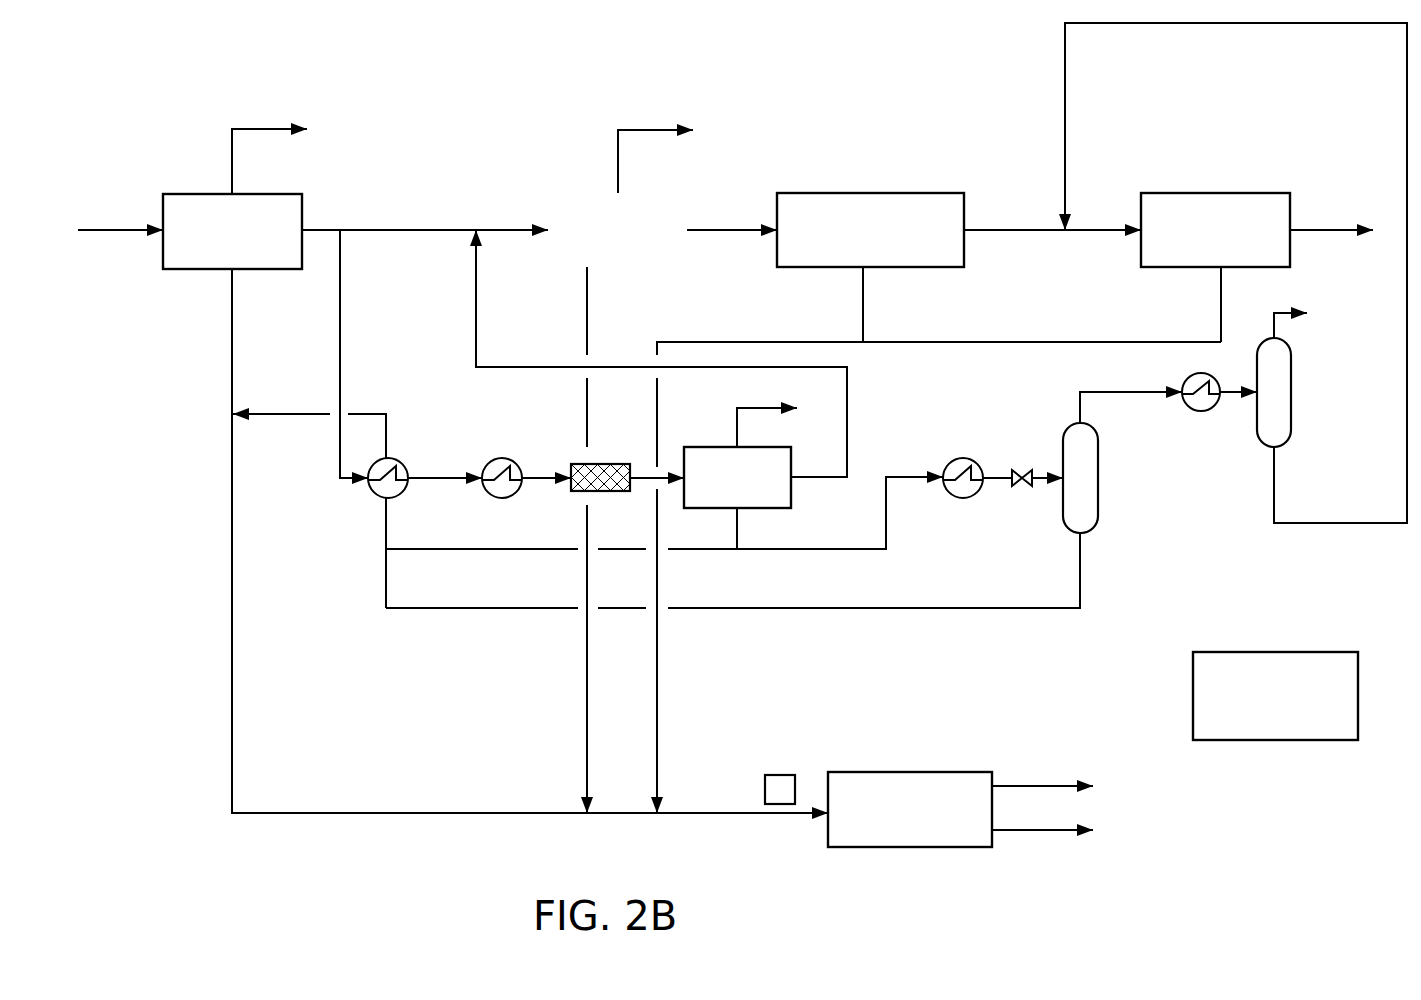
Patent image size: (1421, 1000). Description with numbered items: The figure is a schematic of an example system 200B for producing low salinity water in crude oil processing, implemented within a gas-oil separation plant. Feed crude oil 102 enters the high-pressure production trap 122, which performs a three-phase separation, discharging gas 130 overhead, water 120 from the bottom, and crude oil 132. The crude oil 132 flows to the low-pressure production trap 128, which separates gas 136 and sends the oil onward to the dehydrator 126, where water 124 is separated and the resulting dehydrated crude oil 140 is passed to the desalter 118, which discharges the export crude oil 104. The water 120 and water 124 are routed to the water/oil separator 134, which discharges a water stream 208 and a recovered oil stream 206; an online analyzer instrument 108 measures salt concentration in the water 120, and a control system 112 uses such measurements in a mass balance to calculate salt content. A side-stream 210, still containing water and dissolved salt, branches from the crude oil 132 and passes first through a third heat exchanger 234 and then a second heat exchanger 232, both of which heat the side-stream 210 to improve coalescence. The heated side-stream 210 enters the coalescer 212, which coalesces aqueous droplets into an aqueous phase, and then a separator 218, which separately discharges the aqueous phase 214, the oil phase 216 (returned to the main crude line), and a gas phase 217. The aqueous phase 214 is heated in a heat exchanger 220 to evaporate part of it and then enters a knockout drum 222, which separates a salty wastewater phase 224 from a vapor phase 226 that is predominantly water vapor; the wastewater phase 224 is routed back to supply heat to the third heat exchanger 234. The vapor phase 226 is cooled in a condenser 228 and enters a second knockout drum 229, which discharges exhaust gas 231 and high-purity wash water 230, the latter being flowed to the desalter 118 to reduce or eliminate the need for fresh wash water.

The system 200B is at (175, 100).
The crude oil 102 is at (108, 228).
The export crude oil 104 is at (1325, 228).
The online analyzer instrument 108 is at (780, 775).
The control system 112 is at (1193, 694).
The desalter 118 is at (1176, 192).
The water 120 is at (235, 644).
The high-pressure production trap 122 is at (192, 193).
The water 124 is at (658, 668).
The dehydrator 126 is at (815, 192).
The low-pressure production trap 128 is at (618, 268).
The gas 130 is at (255, 128).
The crude oil 132 is at (316, 228).
The water/oil separator 134 is at (938, 772).
The gas 136 is at (658, 128).
The crude oil 140 is at (988, 228).
The water outlet stream 206 is at (1046, 832).
The water stream 208 is at (1048, 786).
The side-stream 210 is at (338, 312).
The coalescer 212 is at (578, 493).
The aqueous phase 214 is at (816, 550).
The oil phase 216 is at (820, 477).
The gas phase 217 is at (735, 428).
The separator 218 is at (713, 494).
The heat exchanger 220 is at (952, 462).
The knockout drum 222 is at (1098, 497).
The wastewater phase 224 is at (1082, 562).
The vapor phase 226 is at (1082, 402).
The condenser 228 is at (1202, 412).
The second knockout drum 229 is at (1292, 390).
The wash water 230 is at (1276, 462).
The exhaust gas 231 is at (1282, 312).
The second heat exchanger 232 is at (483, 490).
The third heat exchanger 234 is at (368, 490).